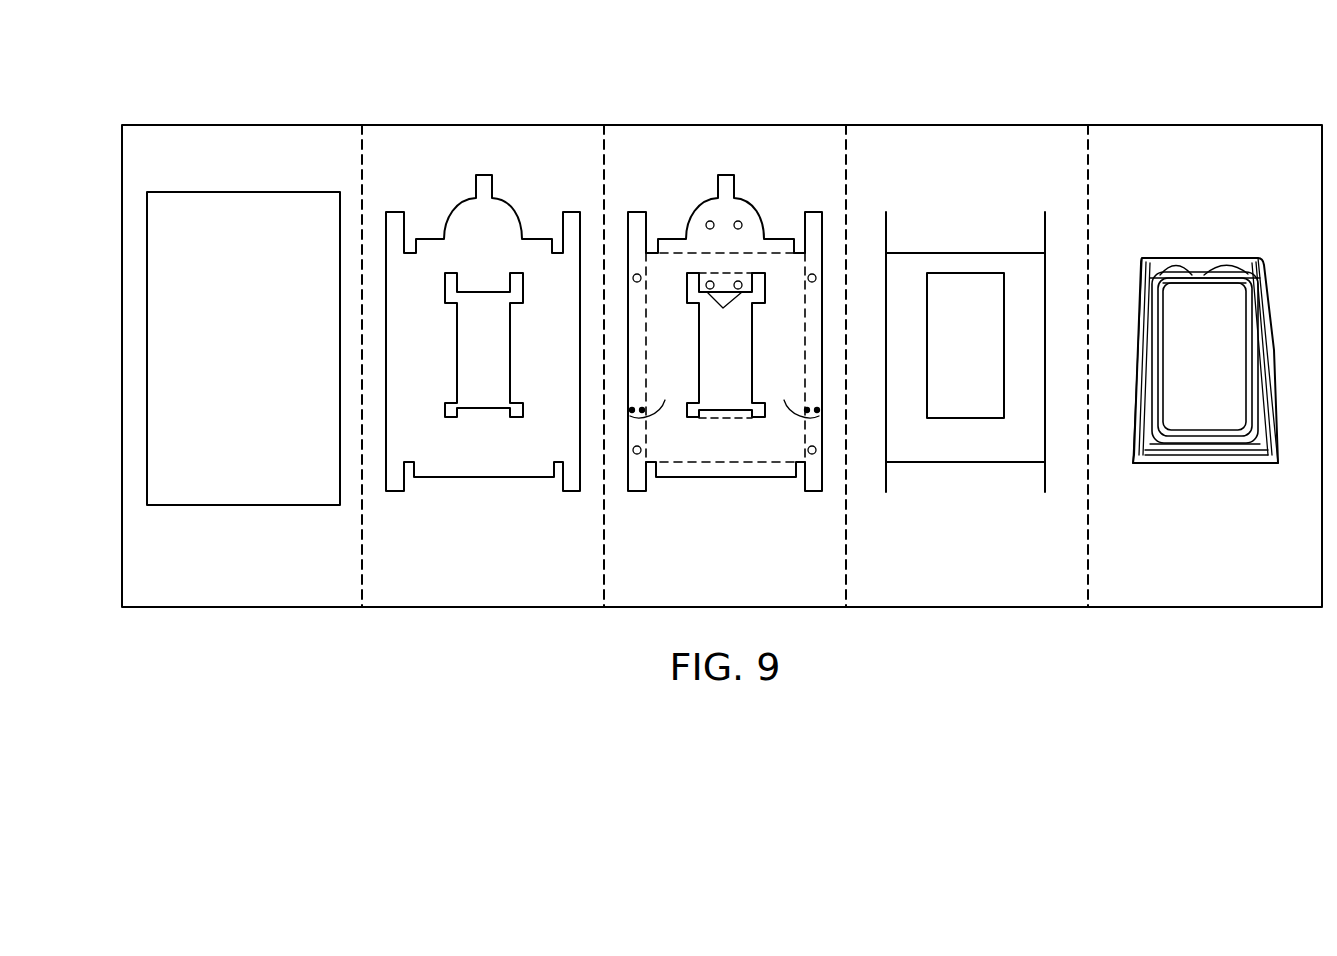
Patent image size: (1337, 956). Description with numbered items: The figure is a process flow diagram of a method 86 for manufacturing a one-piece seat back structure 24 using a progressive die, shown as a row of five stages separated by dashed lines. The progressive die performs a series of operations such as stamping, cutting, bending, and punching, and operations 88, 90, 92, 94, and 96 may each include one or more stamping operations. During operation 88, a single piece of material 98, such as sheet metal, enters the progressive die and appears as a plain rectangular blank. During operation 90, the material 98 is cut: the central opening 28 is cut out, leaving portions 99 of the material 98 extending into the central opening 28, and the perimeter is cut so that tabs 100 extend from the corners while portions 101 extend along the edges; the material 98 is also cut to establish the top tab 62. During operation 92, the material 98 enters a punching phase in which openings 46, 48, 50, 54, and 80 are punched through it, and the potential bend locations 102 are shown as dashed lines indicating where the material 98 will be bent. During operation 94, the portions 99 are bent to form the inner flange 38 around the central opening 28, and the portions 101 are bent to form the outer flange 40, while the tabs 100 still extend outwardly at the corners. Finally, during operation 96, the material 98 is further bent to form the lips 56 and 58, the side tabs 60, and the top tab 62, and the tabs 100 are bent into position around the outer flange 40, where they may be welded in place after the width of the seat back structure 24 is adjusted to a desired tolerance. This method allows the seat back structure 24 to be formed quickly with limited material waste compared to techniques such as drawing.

The method 86 is at (214, 82).
The operation 88 is at (318, 142).
The operation 90 is at (560, 142).
The operation 92 is at (802, 142).
The operation 94 is at (1042, 142).
The operation 96 is at (1284, 142).
The material 98 is at (238, 490).
The tabs 100 is at (396, 226).
The portions 101 is at (540, 249).
The top tab 62 is at (480, 186).
The portions 99 is at (498, 275).
The central opening 28 is at (484, 383).
The bend locations 102 is at (686, 316).
The openings 80 is at (713, 223).
The openings 46 is at (639, 283).
The openings 54 is at (725, 310).
The openings 48 is at (633, 400).
The openings 50 is at (641, 448).
The outer flange 40 is at (886, 360).
The inner flange 38 is at (927, 345).
The seat back structure 24 is at (1132, 221).
The side tabs 60 is at (1150, 277).
The lip 56 is at (1175, 429).
The lip 58 is at (1170, 463).